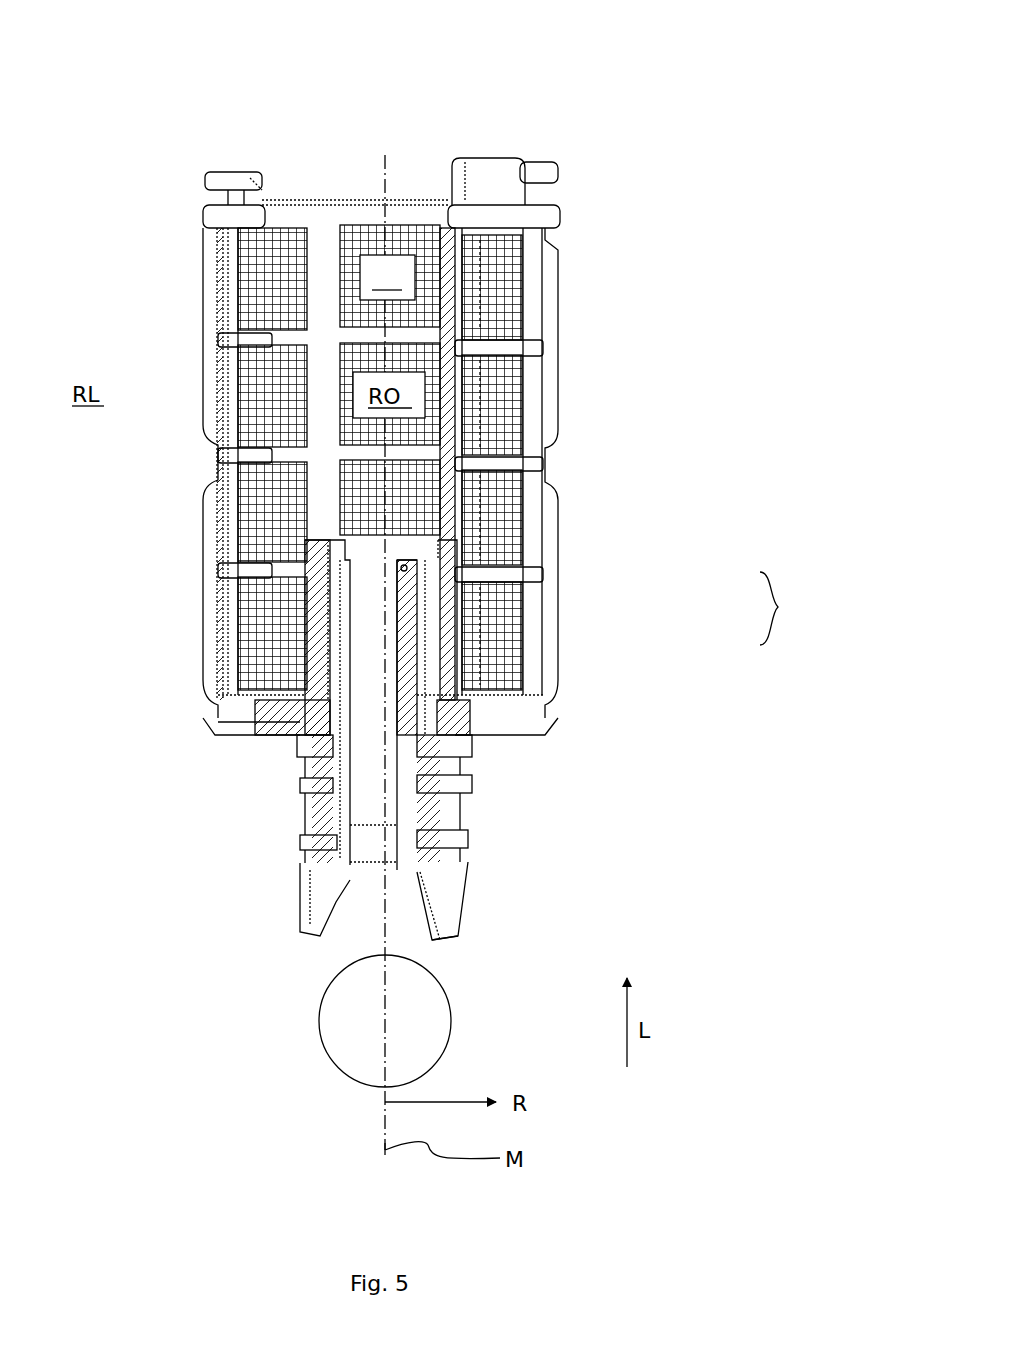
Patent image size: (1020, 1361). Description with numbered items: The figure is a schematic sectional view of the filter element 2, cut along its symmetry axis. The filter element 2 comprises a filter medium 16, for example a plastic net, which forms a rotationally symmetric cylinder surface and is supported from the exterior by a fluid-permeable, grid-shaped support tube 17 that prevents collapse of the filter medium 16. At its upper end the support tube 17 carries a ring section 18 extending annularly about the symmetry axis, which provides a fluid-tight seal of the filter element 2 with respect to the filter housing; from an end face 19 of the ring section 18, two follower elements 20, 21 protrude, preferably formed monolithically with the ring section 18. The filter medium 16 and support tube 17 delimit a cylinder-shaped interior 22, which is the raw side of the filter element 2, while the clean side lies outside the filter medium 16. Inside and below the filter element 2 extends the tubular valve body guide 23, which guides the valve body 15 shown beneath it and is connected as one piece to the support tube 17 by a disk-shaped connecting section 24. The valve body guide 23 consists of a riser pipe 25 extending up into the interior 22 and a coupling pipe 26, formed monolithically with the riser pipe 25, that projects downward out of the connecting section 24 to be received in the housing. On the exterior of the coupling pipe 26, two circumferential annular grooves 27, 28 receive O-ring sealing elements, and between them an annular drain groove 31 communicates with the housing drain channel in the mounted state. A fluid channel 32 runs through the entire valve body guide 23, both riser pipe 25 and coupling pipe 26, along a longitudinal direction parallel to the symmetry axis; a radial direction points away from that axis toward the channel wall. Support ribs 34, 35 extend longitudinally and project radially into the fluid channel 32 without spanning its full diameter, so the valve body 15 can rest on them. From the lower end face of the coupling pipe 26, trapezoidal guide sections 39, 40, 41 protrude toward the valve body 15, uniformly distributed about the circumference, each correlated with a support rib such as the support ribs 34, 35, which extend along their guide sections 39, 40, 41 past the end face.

The filter element 2 is at (376, 86).
The valve body 15 is at (447, 1002).
The filter medium 16 is at (280, 540).
The support tube 17 is at (566, 355).
The ring section 18 is at (560, 213).
The end face 19 is at (558, 205).
The follower element 20 is at (545, 162).
The follower element 21 is at (206, 175).
The interior 22 is at (387, 277).
The valve body guide 23 is at (788, 608).
The connecting section 24 is at (265, 722).
The riser pipe 25 is at (415, 610).
The coupling pipe 26 is at (490, 738).
The annular groove 27 is at (470, 742).
The annular groove 28 is at (468, 848).
The drain groove 31 is at (297, 802).
The fluid channel 32 is at (362, 621).
The support rib 34 is at (397, 820).
The support rib 35 is at (333, 755).
The guide section 39 is at (455, 896).
The guide section 40 is at (434, 938).
The guide section 41 is at (306, 935).